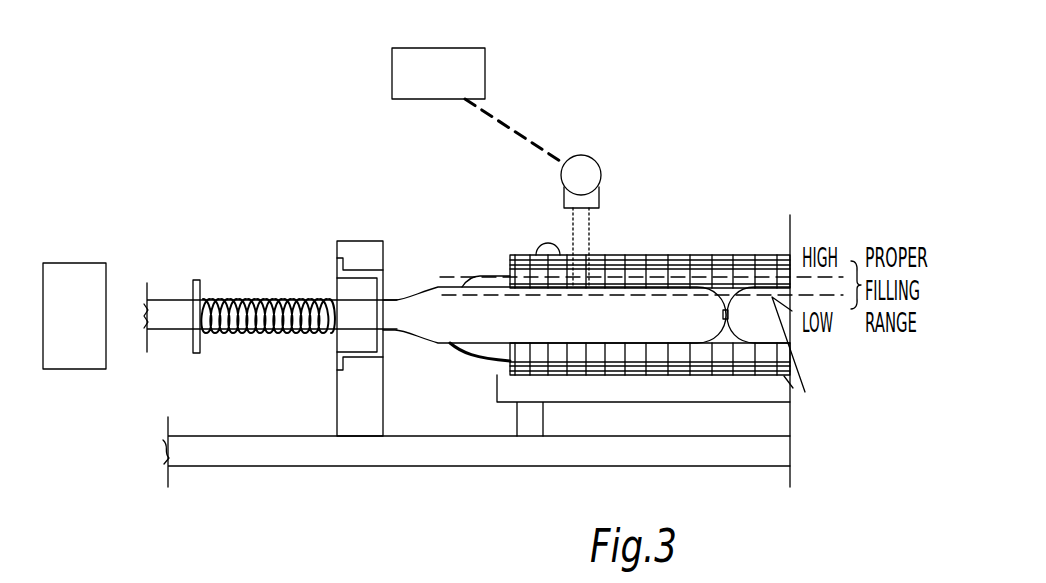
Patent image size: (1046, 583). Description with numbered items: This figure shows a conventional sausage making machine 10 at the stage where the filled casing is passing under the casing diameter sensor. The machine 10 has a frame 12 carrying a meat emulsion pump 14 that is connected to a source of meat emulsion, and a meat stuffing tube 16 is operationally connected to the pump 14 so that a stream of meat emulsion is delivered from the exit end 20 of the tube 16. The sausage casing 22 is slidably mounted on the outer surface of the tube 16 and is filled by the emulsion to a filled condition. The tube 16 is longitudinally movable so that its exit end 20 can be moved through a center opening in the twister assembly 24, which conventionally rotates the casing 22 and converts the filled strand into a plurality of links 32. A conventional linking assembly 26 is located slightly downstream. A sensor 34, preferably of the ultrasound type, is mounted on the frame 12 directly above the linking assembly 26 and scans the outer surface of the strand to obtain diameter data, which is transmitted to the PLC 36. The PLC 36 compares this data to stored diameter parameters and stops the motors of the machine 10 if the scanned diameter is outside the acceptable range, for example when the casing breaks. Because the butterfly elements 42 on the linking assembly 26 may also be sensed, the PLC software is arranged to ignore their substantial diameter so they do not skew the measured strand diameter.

The sausage making machine 10 is at (333, 134).
The frame 12 is at (333, 467).
The meat emulsion pump 14 is at (72, 263).
The meat stuffing tube 16 is at (183, 302).
The exit end 20 is at (400, 306).
The sausage casing 22 is at (262, 298).
The twister assembly 24 is at (360, 241).
The linking assembly 26 is at (706, 246).
The links 32 is at (600, 313).
The sensor 34 is at (585, 155).
The PLC 36 is at (438, 48).
The butterfly elements 42 is at (480, 360).